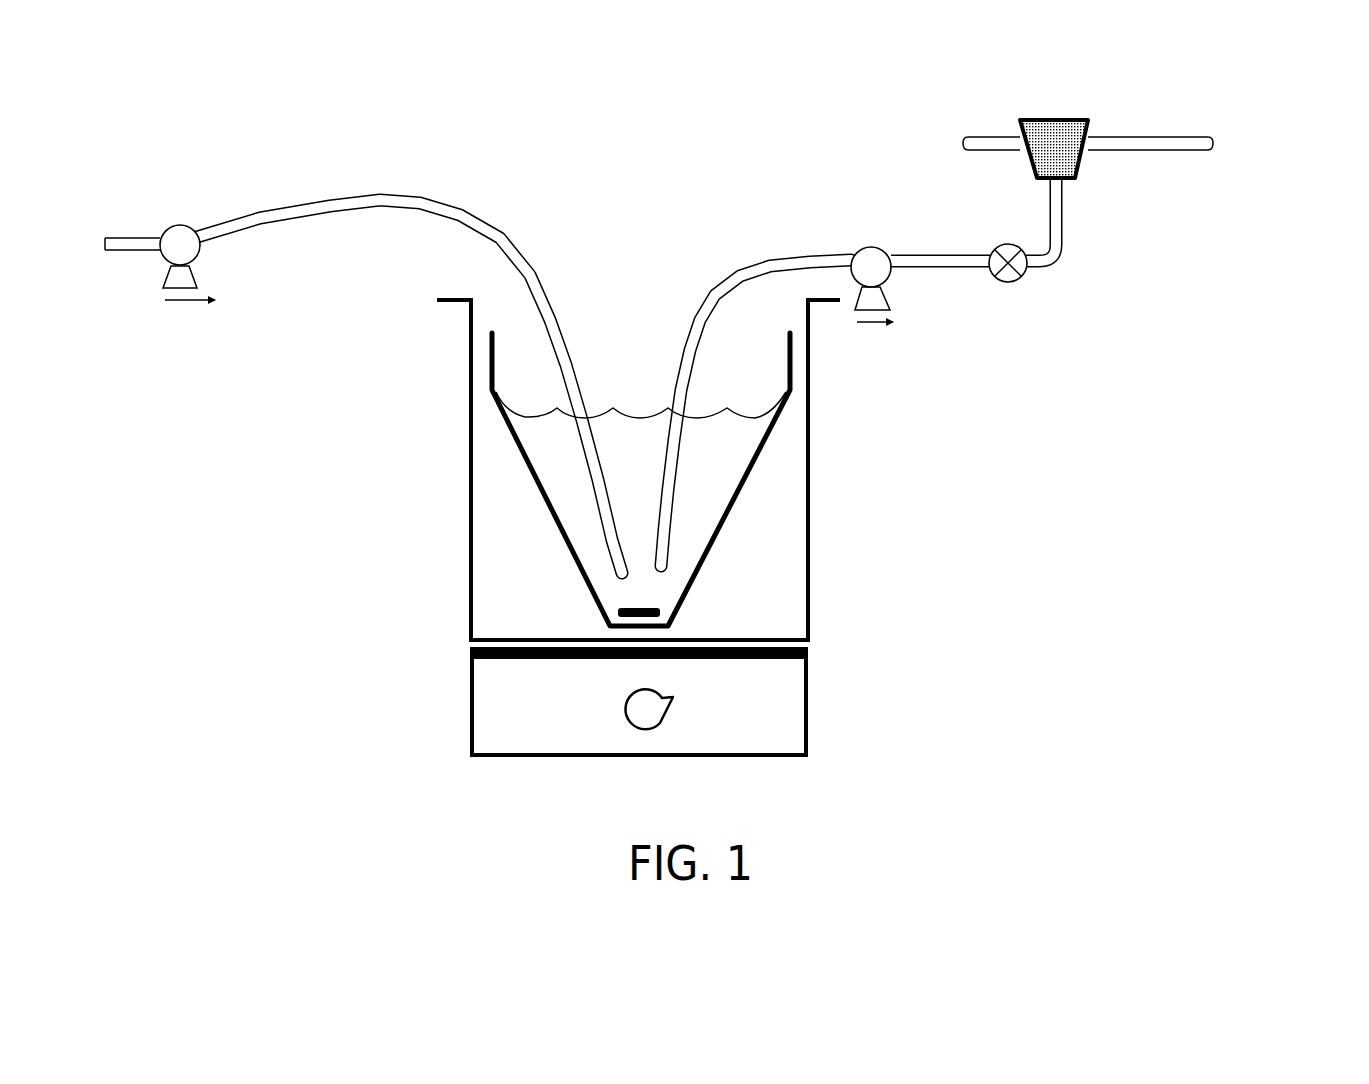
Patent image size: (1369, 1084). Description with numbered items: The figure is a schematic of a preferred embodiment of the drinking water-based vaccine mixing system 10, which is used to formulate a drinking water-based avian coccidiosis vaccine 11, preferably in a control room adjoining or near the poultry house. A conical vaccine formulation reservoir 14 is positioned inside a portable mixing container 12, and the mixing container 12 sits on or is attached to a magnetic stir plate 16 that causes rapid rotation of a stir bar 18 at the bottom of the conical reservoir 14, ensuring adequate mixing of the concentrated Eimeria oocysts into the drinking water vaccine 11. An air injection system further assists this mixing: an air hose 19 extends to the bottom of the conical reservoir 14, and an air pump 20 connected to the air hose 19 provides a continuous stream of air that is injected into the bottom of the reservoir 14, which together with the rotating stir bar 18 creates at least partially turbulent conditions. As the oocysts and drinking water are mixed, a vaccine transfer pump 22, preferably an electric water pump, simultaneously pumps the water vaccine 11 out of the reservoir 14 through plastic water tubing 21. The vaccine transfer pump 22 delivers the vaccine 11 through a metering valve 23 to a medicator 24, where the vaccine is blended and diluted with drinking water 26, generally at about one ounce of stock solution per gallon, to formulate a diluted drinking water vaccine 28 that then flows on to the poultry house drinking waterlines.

The drinking water-based vaccine mixing system 10 is at (1216, 544).
The drinking water vaccine 11 is at (578, 494).
The portable mixing container 12 is at (806, 573).
The conical vaccine formulation reservoir 14 is at (733, 507).
The magnetic stir plate 16 is at (808, 650).
The stir bar 18 is at (612, 612).
The air hose 19 is at (506, 228).
The air pump 20 is at (162, 261).
The plastic water tubing 21 is at (780, 262).
The vaccine transfer pump 22 is at (877, 247).
The metering valve 23 is at (1006, 283).
The medicator 24 is at (1078, 174).
The drinking water 26 is at (950, 143).
The diluted drinking water vaccine 28 is at (1222, 143).